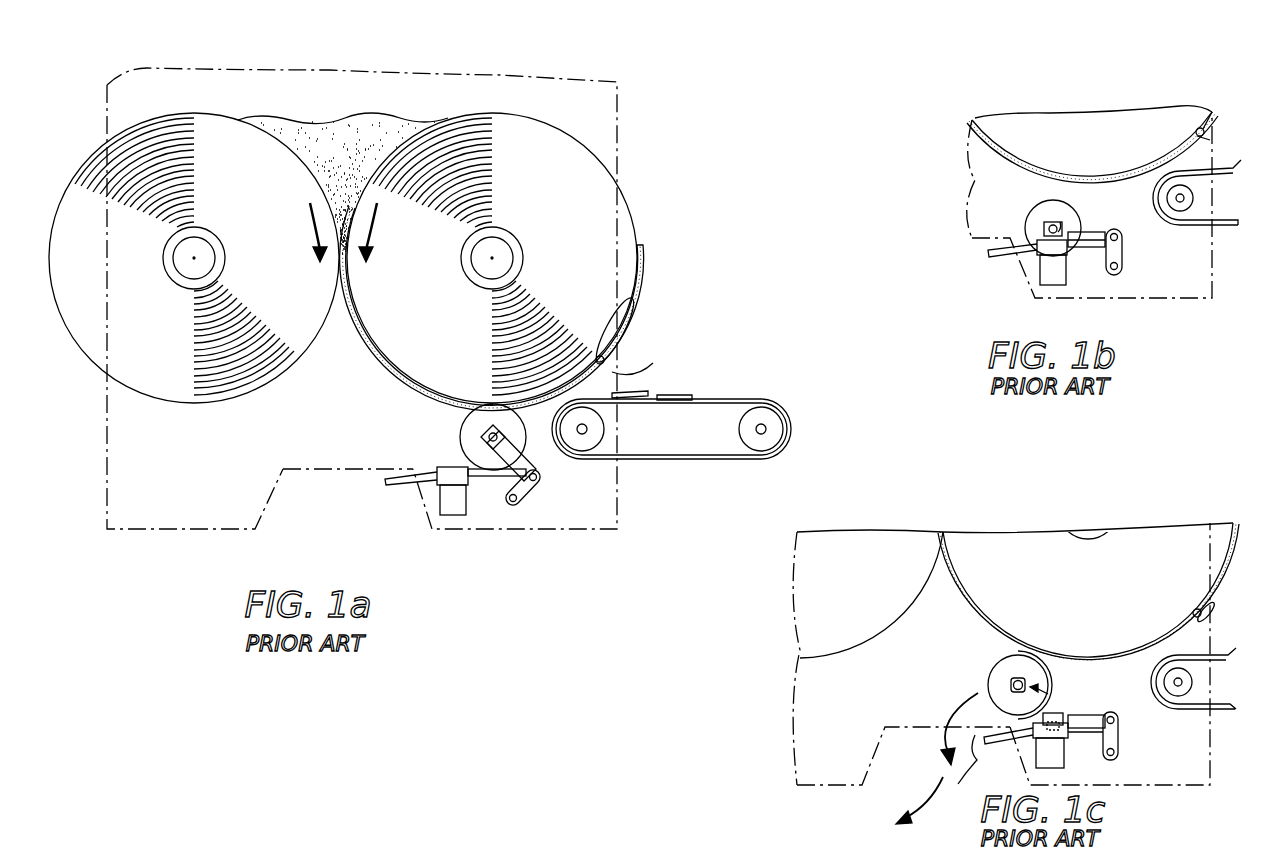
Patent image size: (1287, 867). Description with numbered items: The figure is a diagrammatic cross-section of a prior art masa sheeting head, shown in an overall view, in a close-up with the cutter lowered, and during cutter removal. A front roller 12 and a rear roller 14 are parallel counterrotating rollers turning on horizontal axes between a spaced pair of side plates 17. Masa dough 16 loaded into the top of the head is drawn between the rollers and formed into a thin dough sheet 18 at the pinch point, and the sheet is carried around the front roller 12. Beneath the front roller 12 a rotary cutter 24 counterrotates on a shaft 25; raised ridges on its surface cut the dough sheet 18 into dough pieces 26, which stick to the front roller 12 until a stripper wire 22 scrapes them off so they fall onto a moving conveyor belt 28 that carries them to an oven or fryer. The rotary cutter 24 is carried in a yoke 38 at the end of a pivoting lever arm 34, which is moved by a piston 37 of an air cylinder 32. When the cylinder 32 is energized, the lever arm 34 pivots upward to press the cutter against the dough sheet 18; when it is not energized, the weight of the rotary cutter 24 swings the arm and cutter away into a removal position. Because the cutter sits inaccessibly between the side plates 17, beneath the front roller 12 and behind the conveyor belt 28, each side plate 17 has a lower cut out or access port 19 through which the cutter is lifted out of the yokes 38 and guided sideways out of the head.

In FIG. 1a, the front roller 12 is at (512, 128).
In FIG. 1b, the front roller 12 is at (1032, 133).
In FIG. 1c, the front roller 12 is at (1005, 565).
In FIG. 1a, the rear roller 14 is at (83, 202).
In FIG. 1c, the rear roller 14 is at (853, 562).
In FIG. 1a, the masa dough 16 is at (362, 125).
In FIG. 1a, the side plates 17 is at (618, 106).
In FIG. 1c, the side plates 17 is at (1212, 768).
In FIG. 1a, the dough sheet 18 is at (362, 340).
In FIG. 1b, the dough sheet 18 is at (1092, 148).
In FIG. 1c, the dough sheet 18 is at (1088, 591).
In FIG. 1a, the access port 19 is at (333, 471).
In FIG. 1c, the access port 19 is at (959, 770).
In FIG. 1a, the stripper wire 22 is at (633, 306).
In FIG. 1b, the stripper wire 22 is at (1198, 128).
In FIG. 1c, the stripper wire 22 is at (1193, 610).
In FIG. 1a, the rotary cutter 24 is at (475, 420).
In FIG. 1b, the rotary cutter 24 is at (1051, 208).
In FIG. 1c, the rotary cutter 24 is at (1012, 665).
In FIG. 1a, the shaft 25 is at (480, 450).
In FIG. 1b, the shaft 25 is at (1040, 240).
In FIG. 1c, the shaft 25 is at (1010, 685).
In FIG. 1a, the dough pieces 26 is at (640, 392).
In FIG. 1a, the conveyor belt 28 is at (727, 400).
In FIG. 1b, the conveyor belt 28 is at (1214, 173).
In FIG. 1c, the conveyor belt 28 is at (1200, 658).
In FIG. 1a, the air cylinder 32 is at (446, 474).
In FIG. 1b, the air cylinder 32 is at (1000, 248).
In FIG. 1c, the air cylinder 32 is at (1040, 740).
In FIG. 1a, the lever arm 34 is at (542, 455).
In FIG. 1b, the lever arm 34 is at (1096, 232).
In FIG. 1c, the lever arm 34 is at (1088, 714).
In FIG. 1a, the piston 37 is at (482, 482).
In FIG. 1b, the piston 37 is at (1085, 248).
In FIG. 1c, the piston 37 is at (1084, 733).
In FIG. 1a, the yoke 38 is at (486, 404).
In FIG. 1b, the yoke 38 is at (1060, 226).
In FIG. 1c, the yoke 38 is at (1057, 713).